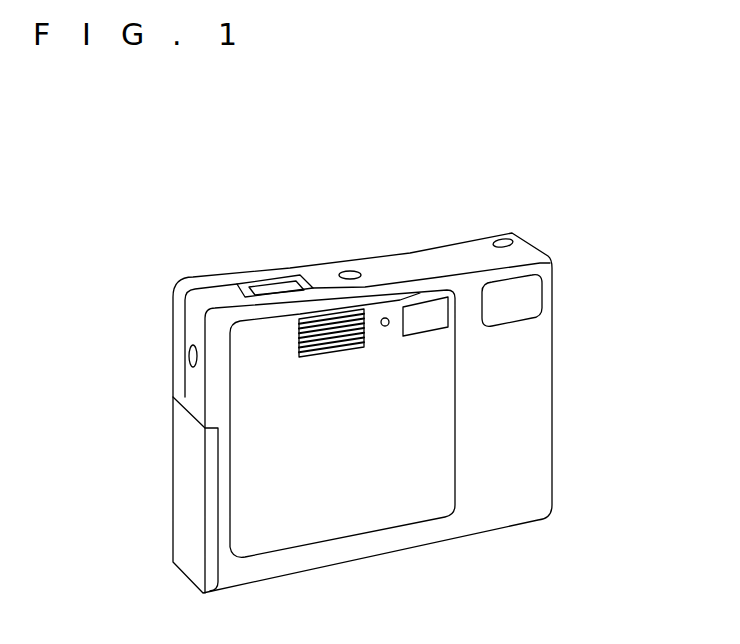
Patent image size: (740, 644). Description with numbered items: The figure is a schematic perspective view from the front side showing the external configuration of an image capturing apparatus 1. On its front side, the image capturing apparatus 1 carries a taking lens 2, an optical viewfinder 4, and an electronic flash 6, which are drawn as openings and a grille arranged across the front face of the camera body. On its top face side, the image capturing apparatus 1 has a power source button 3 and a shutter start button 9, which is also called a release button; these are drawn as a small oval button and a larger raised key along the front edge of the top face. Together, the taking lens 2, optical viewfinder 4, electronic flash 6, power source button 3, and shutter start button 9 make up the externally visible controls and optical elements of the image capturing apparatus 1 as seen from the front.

The image capturing apparatus 1 is at (470, 181).
The taking lens 2 is at (527, 297).
The power source button 3 is at (349, 272).
The optical viewfinder 4 is at (430, 325).
The electronic flash 6 is at (366, 324).
The shutter start button 9 is at (274, 283).